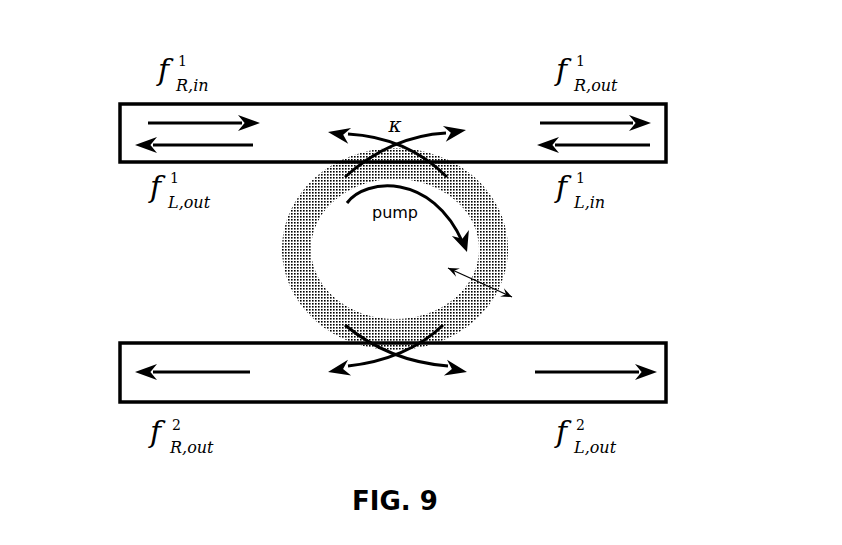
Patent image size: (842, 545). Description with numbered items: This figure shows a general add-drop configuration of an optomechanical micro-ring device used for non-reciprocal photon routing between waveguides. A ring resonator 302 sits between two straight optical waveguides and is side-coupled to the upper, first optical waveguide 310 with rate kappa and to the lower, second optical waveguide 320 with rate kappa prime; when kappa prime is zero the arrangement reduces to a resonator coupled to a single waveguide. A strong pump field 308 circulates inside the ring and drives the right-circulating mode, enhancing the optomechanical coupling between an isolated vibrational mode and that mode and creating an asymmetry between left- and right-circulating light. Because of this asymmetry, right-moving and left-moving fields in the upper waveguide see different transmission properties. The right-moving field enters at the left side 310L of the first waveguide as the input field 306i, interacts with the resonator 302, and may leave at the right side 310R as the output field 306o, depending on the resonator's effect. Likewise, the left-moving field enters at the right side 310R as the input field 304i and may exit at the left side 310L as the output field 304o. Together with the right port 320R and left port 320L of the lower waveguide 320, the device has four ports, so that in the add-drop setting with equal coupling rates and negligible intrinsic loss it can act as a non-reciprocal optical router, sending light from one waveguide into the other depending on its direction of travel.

The ring resonator 302 is at (361, 249).
The pump field 308 is at (508, 267).
The first optical waveguide 310 is at (393, 90).
The right side of the first waveguide 310R is at (147, 89).
The left side of the first waveguide 310L is at (630, 87).
The left-moving output field 304o is at (159, 169).
The left-moving input field 304i is at (613, 185).
The right-moving input field 306i is at (354, 107).
The right-moving output field 306o is at (442, 106).
The second optical waveguide 320 is at (393, 397).
The right port of the second waveguide 320R is at (143, 336).
The left port of the second waveguide 320L is at (628, 336).